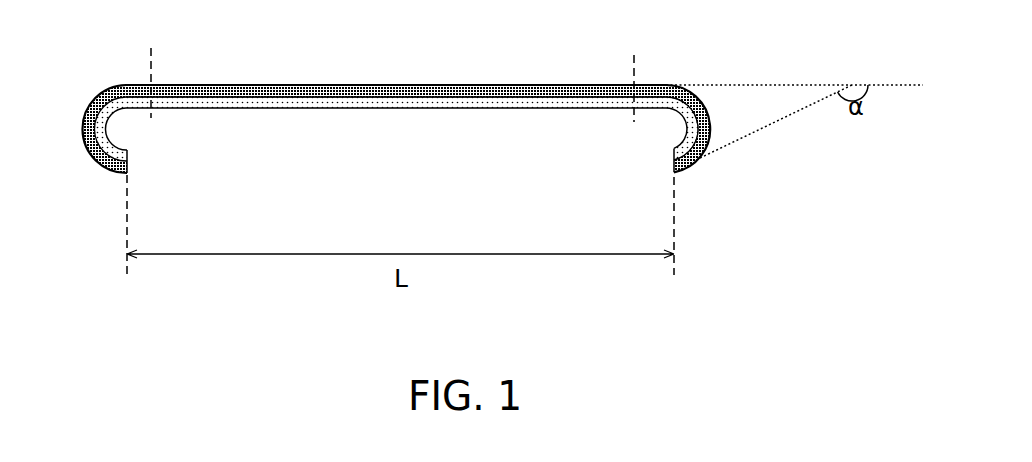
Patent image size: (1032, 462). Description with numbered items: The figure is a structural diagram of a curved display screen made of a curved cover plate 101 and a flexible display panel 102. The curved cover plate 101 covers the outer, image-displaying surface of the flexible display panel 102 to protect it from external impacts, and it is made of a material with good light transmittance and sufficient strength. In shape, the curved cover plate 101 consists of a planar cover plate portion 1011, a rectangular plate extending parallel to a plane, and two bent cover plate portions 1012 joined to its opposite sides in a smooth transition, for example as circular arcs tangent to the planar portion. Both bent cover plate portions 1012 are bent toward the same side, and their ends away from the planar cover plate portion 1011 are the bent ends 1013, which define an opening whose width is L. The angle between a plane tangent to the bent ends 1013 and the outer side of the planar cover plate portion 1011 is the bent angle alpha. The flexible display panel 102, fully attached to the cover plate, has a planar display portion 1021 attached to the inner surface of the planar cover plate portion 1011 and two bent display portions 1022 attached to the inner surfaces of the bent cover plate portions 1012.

The curved cover plate 101 is at (396, 86).
The planar cover plate portion 1011 is at (618, 84).
The bent cover plate portion 1012 is at (672, 104).
The bent end 1013 is at (131, 169).
The flexible display panel 102 is at (397, 141).
The planar display portion 1021 is at (630, 102).
The bent display portion 1022 is at (673, 153).